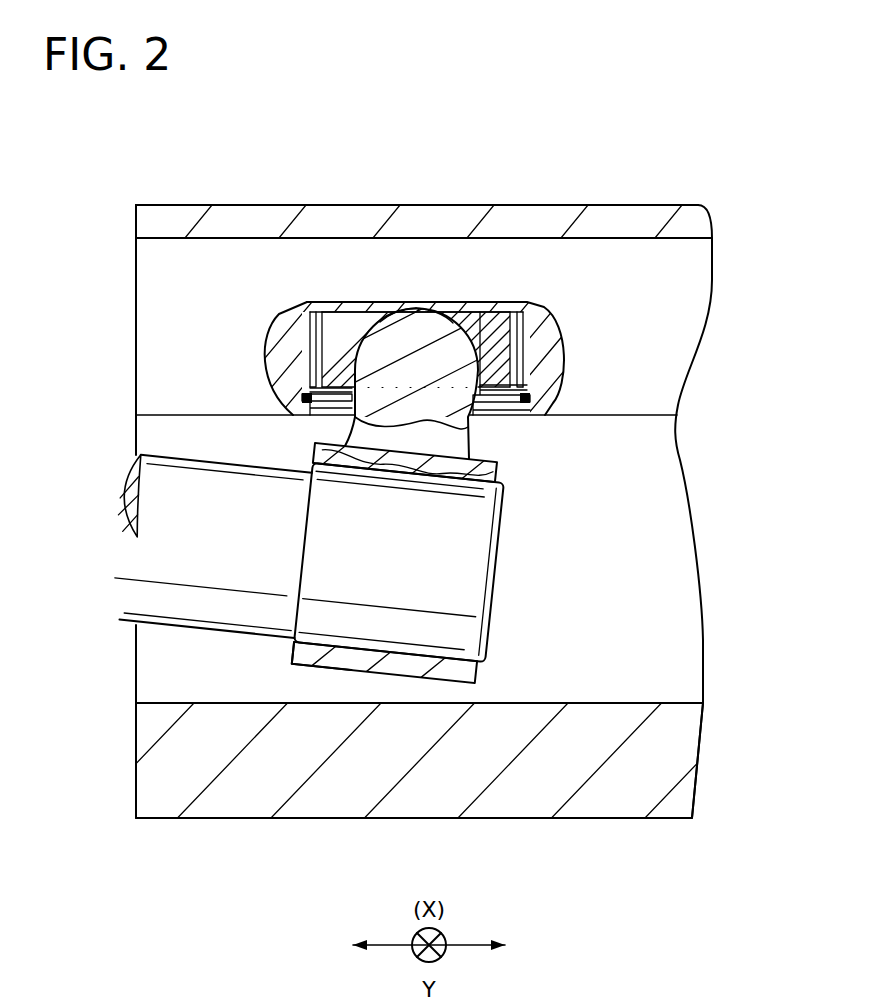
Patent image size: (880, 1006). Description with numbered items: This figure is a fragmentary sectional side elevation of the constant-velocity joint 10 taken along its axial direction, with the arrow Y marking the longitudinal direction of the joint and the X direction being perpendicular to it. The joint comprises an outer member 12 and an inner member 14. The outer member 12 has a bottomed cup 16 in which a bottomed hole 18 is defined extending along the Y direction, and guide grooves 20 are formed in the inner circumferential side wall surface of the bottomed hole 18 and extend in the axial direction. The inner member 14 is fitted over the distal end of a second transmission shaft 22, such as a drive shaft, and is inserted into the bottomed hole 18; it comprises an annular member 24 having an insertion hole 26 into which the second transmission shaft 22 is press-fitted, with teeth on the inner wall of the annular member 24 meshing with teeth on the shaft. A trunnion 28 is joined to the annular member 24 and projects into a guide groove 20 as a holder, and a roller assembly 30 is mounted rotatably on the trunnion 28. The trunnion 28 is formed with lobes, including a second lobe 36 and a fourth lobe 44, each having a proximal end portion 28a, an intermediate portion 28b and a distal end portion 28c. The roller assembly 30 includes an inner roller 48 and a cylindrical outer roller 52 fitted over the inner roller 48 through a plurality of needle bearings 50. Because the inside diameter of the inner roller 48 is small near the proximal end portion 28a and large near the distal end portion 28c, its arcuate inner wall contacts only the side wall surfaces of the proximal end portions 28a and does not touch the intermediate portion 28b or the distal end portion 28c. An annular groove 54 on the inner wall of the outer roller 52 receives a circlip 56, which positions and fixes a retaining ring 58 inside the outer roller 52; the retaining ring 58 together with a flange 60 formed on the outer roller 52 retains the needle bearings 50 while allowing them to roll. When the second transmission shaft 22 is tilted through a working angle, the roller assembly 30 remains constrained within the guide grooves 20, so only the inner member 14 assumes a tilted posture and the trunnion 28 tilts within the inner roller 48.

The constant-velocity joint 10 is at (240, 207).
The outer member 12 is at (497, 820).
The inner member 14 is at (319, 682).
The bottomed cup 16 is at (419, 760).
The bottomed hole 18 is at (690, 478).
The guide grooves 20 is at (591, 240).
The second transmission shaft 22 is at (202, 603).
The annular member 24 is at (413, 664).
The insertion hole 26 is at (363, 650).
The trunnion 28 is at (413, 329).
The proximal end portion 28a is at (397, 400).
The intermediate portion 28b is at (377, 333).
The distal end portion 28c is at (453, 325).
The roller assembly 30 is at (541, 334).
The second lobe 36 is at (515, 349).
The fourth lobe 44 is at (327, 343).
The inner roller 48 is at (493, 370).
The needle bearings 50 is at (310, 333).
The outer roller 52 is at (286, 379).
The annular groove 54 is at (307, 410).
The circlip 56 is at (540, 401).
The retaining ring 58 is at (536, 397).
The flange 60 is at (317, 318).